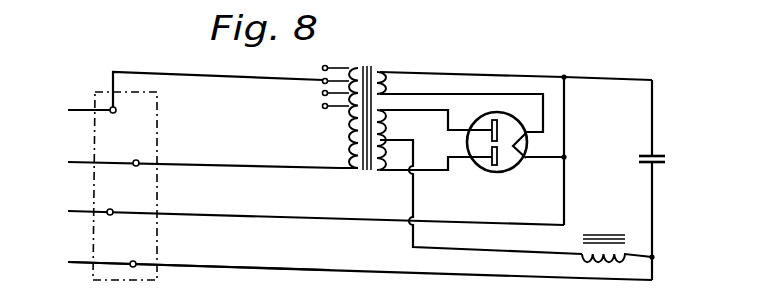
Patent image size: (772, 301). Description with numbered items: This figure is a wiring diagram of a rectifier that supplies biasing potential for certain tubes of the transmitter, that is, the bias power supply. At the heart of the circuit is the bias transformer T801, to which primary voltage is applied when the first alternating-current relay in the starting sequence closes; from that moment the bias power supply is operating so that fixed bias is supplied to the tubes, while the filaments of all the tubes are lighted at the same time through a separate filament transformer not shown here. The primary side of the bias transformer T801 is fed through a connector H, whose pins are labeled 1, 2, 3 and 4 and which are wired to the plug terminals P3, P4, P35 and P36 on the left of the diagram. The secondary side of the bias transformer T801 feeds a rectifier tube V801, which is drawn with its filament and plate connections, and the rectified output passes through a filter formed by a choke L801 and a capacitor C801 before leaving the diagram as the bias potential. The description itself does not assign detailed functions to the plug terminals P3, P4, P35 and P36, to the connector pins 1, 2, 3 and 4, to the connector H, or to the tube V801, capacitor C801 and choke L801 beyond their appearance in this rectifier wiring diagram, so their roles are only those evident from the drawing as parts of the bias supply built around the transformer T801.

The plug terminal P3 is at (79, 109).
The plug terminal P4 is at (189, 163).
The plug terminal P35 is at (297, 214).
The plug terminal P36 is at (180, 263).
The connector pin 1 is at (120, 111).
The connector pin 2 is at (135, 154).
The connector pin 3 is at (108, 203).
The connector pin 4 is at (132, 255).
The connector plug H is at (160, 127).
The bias transformer T801 is at (335, 137).
The rectifier tube 5Z3 V801 is at (503, 171).
The filter capacitor C801 is at (664, 166).
The filter choke L801 is at (578, 257).